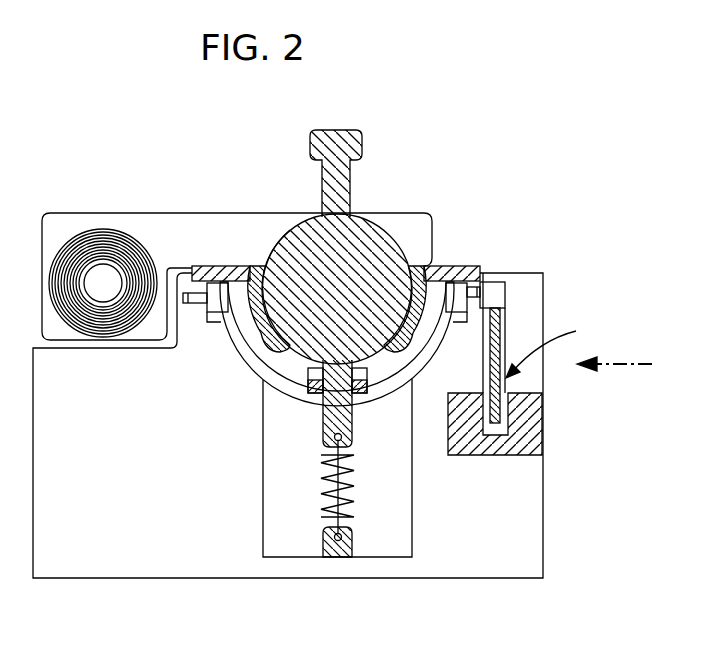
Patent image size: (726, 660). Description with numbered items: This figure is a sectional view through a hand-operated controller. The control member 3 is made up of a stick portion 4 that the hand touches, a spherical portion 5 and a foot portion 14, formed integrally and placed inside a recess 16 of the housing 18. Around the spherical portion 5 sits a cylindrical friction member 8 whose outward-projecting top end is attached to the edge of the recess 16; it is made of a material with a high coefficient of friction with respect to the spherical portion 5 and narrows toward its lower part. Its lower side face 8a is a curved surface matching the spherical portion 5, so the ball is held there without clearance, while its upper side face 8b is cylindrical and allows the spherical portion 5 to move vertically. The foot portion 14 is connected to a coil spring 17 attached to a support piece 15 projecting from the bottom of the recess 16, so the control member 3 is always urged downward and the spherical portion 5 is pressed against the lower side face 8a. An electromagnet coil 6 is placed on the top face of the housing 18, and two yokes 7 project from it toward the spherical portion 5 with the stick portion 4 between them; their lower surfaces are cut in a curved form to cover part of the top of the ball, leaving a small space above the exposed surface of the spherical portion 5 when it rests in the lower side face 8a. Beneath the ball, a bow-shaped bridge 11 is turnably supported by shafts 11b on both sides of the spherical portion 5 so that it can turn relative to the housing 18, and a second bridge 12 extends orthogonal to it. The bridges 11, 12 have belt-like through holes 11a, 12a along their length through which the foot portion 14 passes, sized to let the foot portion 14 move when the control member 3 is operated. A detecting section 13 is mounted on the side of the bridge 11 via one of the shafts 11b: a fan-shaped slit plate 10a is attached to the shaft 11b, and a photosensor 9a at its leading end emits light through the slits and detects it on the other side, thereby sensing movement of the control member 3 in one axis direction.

The control member 3 is at (625, 367).
The stick portion 4 is at (350, 141).
The spherical portion 5 is at (357, 237).
The electromagnet coil 6 is at (103, 230).
The yokes 7 is at (218, 226).
The friction member 8 is at (457, 266).
The lower side face 8a is at (287, 357).
The upper side face 8b is at (282, 276).
The photosensor 9a is at (540, 430).
The slit plate 10a is at (494, 322).
The bridge 11 is at (230, 337).
The through hole 11a is at (290, 397).
The shafts 11b is at (190, 295).
The bridge 12 is at (368, 393).
The through hole 12a is at (347, 418).
The detecting section 13 is at (556, 346).
The foot portion 14 is at (350, 508).
The support piece 15 is at (329, 560).
The recess 16 is at (385, 560).
The coil spring 17 is at (322, 478).
The housing 18 is at (180, 580).